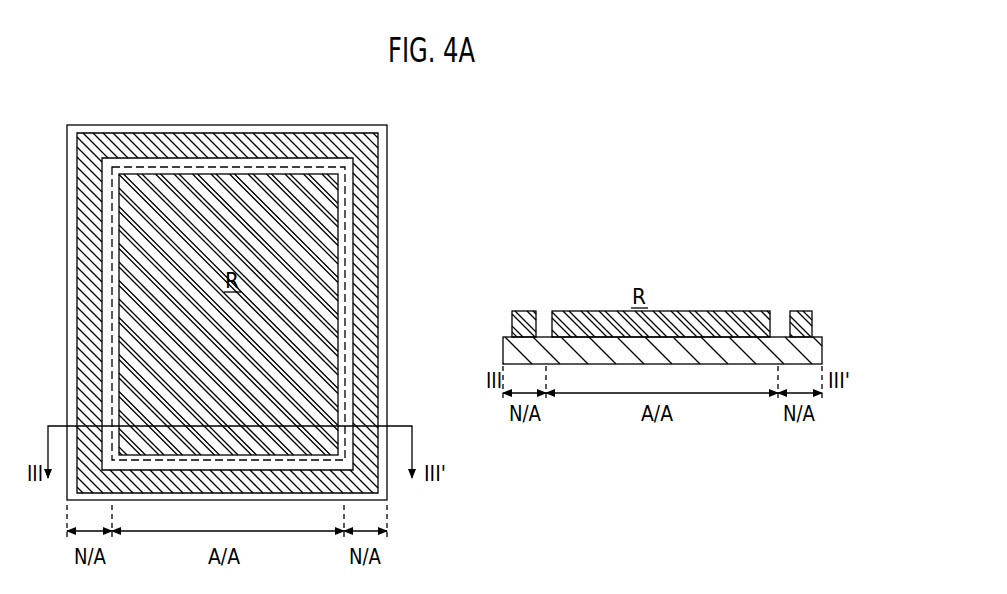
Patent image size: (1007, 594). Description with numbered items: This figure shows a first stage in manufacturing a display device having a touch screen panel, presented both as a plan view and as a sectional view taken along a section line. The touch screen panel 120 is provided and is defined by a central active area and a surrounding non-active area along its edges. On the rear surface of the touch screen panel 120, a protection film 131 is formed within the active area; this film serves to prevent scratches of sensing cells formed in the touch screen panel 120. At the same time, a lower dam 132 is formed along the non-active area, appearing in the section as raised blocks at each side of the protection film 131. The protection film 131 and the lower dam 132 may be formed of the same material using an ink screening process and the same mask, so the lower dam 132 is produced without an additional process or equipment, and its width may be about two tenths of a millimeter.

The touch screen panel 120 is at (388, 352).
The protection film 131 is at (316, 222).
The lower dam 132 is at (367, 265).